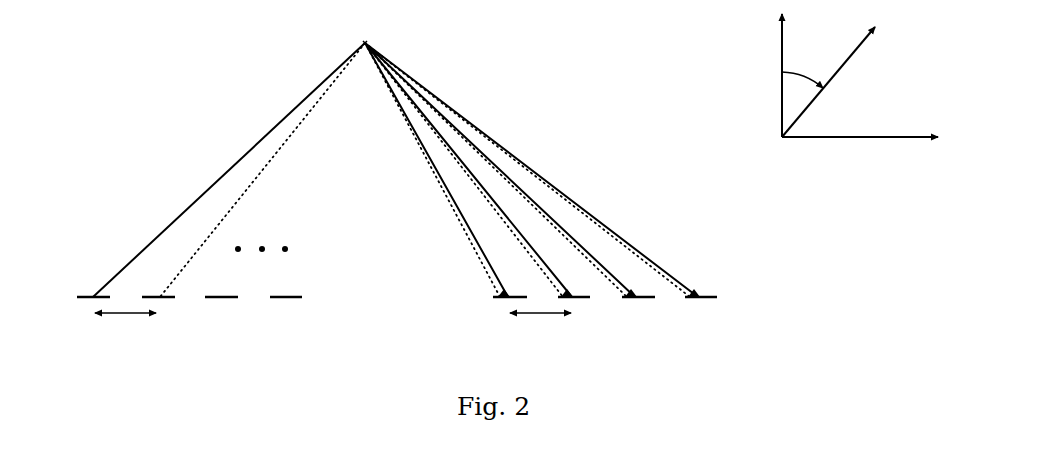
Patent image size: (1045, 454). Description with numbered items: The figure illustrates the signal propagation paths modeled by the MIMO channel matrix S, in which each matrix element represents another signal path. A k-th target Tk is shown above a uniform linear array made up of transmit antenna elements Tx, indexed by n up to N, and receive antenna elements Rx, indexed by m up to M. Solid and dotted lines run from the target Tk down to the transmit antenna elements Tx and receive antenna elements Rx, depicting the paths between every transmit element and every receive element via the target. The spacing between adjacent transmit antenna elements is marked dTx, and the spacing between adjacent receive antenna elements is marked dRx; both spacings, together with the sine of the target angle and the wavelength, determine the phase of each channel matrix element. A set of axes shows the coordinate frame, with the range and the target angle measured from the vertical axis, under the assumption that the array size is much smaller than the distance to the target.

The k-th target Tk is at (380, 26).
The transmit antenna elements Tx is at (197, 207).
The receive antenna elements Rx is at (541, 207).
The transmit antenna element spacing dTx is at (125, 327).
The receive antenna element spacing dRx is at (540, 327).
The polar coordinate system (x, y, r, phi) axes is at (849, 82).